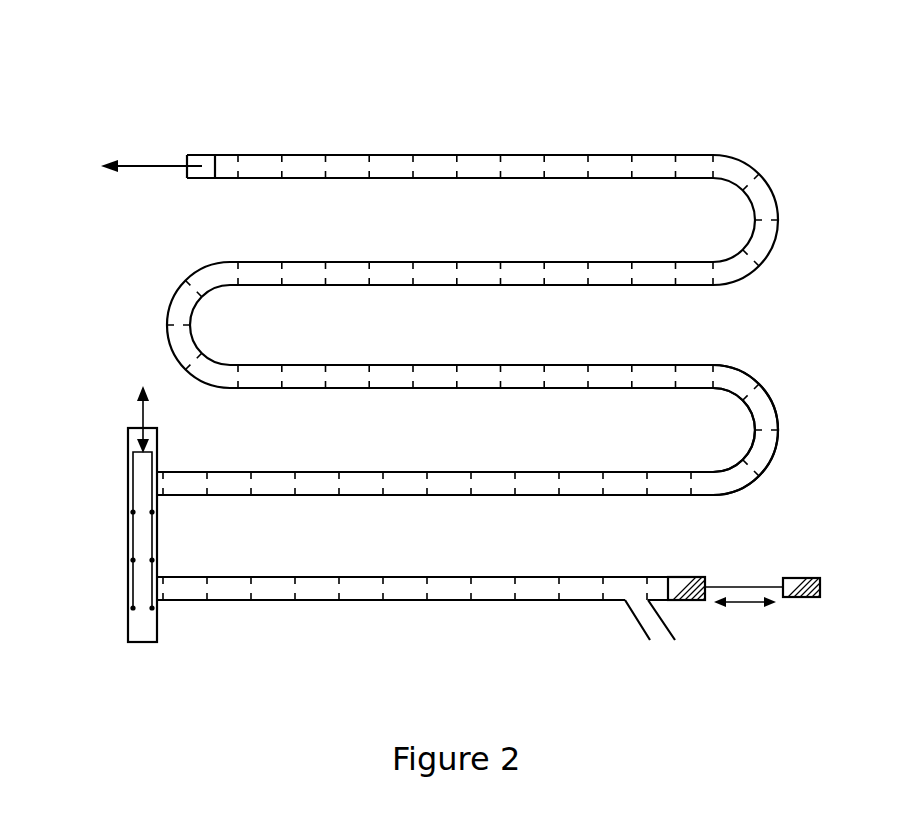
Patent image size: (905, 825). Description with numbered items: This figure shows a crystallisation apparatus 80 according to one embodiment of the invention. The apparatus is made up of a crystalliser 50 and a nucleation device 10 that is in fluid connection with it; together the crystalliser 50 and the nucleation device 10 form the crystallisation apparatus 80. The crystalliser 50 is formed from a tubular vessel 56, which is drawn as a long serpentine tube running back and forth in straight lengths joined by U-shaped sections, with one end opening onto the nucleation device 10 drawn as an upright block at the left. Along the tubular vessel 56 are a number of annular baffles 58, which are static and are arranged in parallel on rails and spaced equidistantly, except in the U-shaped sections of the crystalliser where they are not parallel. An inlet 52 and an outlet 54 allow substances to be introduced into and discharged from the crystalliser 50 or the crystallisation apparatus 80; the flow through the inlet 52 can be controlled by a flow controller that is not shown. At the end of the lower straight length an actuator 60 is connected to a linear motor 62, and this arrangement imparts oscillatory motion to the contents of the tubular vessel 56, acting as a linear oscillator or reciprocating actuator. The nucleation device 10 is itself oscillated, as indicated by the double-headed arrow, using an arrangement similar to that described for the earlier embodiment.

The crystallisation apparatus 80 is at (664, 102).
The crystalliser 50 is at (777, 408).
The tubular vessel 56 is at (778, 448).
The annular baffles 58 is at (677, 283).
The outlet 54 is at (152, 165).
The nucleation device 10 is at (128, 532).
The inlet 52 is at (661, 637).
The actuator 60 is at (698, 600).
The linear motor 62 is at (820, 588).